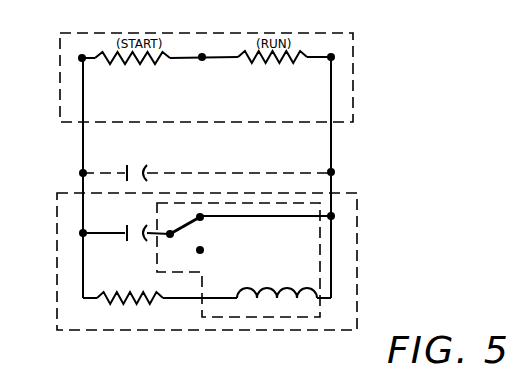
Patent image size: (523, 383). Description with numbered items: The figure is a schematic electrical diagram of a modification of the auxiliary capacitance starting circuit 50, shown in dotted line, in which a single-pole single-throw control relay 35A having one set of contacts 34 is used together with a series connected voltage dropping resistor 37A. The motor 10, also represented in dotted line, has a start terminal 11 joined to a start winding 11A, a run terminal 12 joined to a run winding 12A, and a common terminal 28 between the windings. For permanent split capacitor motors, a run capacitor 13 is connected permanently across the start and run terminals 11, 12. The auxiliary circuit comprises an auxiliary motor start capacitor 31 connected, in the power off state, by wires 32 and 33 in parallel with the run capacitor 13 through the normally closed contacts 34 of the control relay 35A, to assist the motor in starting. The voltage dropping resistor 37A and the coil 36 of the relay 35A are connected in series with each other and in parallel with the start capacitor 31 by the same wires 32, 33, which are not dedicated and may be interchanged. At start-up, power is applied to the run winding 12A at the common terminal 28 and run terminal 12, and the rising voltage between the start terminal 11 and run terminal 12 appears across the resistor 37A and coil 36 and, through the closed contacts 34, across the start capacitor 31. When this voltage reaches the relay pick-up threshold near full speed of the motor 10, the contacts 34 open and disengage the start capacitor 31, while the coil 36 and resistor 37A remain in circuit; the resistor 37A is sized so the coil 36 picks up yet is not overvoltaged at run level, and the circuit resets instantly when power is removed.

The motor 10 is at (356, 82).
The start terminal 11 is at (80, 57).
The start winding 11A is at (128, 63).
The run terminal 12 is at (331, 57).
The run winding 12A is at (272, 60).
The common terminal 28 is at (203, 62).
The run capacitor 13 is at (136, 168).
The auxiliary motor start capacitor 31 is at (131, 244).
The wire 32 is at (83, 138).
The wire 33 is at (331, 128).
The contacts 34 is at (204, 236).
The SPST control relay 35A is at (262, 197).
The coil 36 is at (276, 286).
The voltage dropping resistor 37A is at (130, 302).
The auxiliary capacitance starting circuit 50 is at (362, 279).